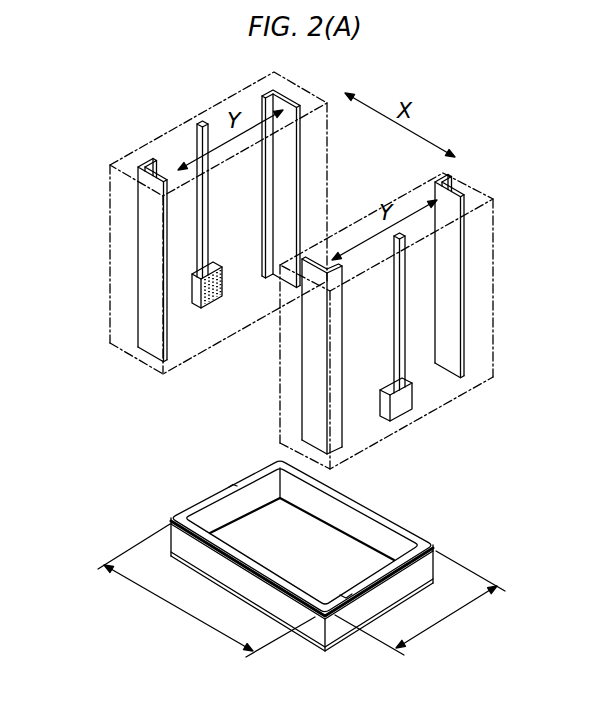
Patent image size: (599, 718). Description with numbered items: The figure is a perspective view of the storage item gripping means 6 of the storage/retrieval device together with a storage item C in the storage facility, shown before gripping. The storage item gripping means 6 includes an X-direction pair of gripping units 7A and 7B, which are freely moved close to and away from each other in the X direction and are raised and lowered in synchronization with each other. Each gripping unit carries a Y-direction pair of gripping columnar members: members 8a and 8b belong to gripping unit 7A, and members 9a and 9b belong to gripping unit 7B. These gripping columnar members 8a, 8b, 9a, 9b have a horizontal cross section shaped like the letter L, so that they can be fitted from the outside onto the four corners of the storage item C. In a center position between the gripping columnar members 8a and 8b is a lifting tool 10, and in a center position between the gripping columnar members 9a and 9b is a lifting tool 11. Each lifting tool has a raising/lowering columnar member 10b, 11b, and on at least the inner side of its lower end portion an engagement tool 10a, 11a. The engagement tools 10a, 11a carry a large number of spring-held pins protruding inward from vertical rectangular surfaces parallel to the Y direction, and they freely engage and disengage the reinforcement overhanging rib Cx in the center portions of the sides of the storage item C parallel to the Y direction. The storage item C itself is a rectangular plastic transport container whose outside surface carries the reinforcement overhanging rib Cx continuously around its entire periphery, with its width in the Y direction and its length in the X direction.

The storage item gripping means 6 is at (100, 260).
The gripping unit 7A is at (160, 131).
The gripping unit 7B is at (496, 280).
The gripping columnar member 8a is at (152, 262).
The gripping columnar member 8b is at (291, 188).
The gripping columnar member 9a is at (340, 425).
The gripping columnar member 9b is at (457, 327).
The lifting tool 10 is at (190, 292).
The engagement tool 10a is at (224, 292).
The raising/lowering columnar member 10b is at (196, 212).
The lifting tool 11 is at (416, 394).
The engagement tool 11a is at (379, 398).
The raising/lowering columnar member 11b is at (408, 280).
The storage item C is at (212, 510).
The reinforcement overhanging rib Cx is at (233, 484).